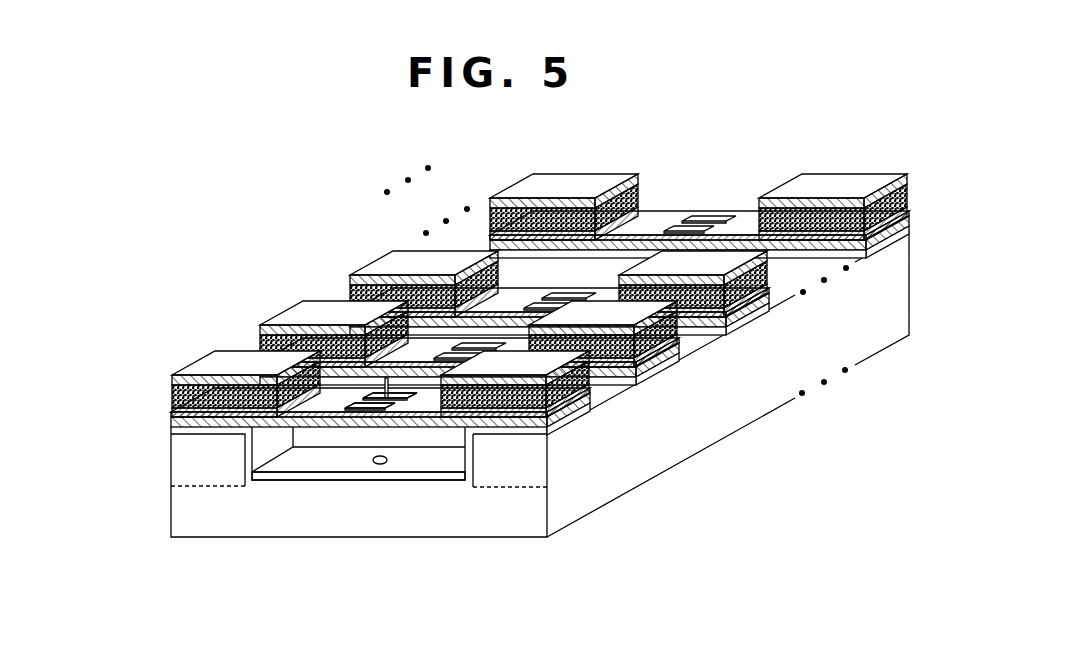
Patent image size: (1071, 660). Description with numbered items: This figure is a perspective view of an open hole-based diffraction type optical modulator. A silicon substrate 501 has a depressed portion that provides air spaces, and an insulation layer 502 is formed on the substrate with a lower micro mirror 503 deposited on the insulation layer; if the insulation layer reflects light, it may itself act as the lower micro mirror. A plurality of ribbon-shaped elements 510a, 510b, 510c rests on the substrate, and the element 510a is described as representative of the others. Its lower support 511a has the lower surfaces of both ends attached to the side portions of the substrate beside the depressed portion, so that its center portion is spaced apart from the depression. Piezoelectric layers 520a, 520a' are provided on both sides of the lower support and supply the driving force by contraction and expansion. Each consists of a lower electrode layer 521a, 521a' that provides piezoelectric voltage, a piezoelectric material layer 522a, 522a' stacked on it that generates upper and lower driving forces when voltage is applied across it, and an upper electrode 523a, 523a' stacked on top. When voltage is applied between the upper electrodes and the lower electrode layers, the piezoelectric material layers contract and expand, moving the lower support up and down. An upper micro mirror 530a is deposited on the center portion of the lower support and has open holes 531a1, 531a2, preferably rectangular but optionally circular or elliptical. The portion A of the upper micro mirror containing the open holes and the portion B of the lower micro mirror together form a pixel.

The silicon substrate 501 is at (463, 540).
The insulation layer 502 is at (410, 480).
The lower micro mirror 503 is at (292, 478).
The portion of the lower micro mirror B is at (380, 464).
The element 510a is at (413, 385).
The element 510b is at (292, 323).
The element 510c is at (513, 194).
The lower support 511a is at (351, 410).
The piezoelectric layer 520a is at (207, 352).
The lower electrode layer 521a is at (216, 373).
The piezoelectric material layer 522a is at (223, 359).
The upper electrode 523a is at (232, 340).
The piezoelectric layer 520a' is at (600, 445).
The lower electrode layer 521a' is at (560, 457).
The piezoelectric material layer 522a' is at (574, 436).
The upper electrode 523a' is at (587, 422).
The upper micro mirror 530a is at (385, 381).
The open hole 531a1 is at (350, 406).
The open hole 531a2 is at (396, 397).
The portion of the upper micro mirror A is at (387, 405).